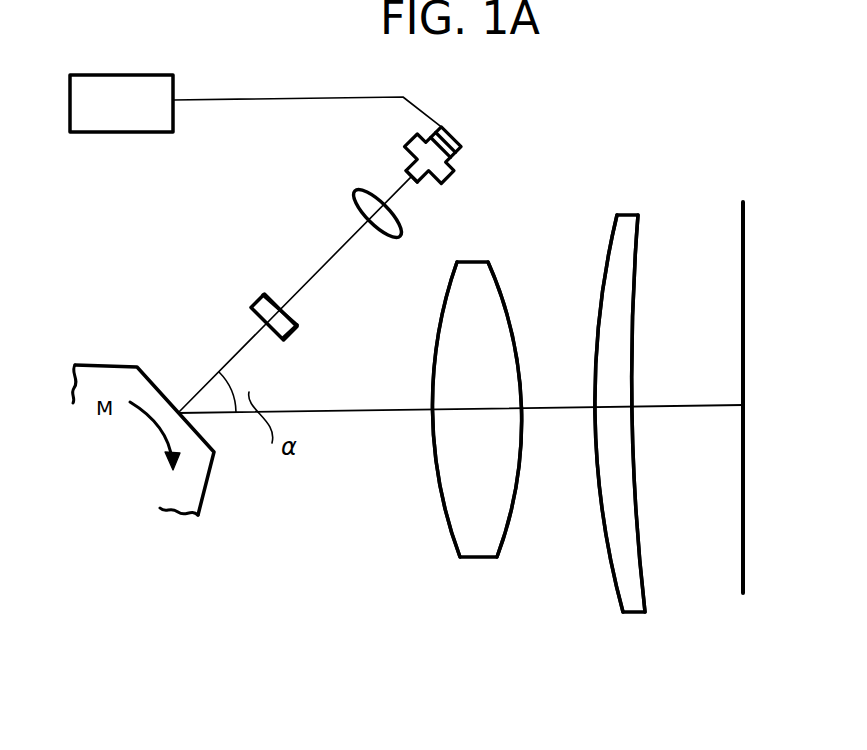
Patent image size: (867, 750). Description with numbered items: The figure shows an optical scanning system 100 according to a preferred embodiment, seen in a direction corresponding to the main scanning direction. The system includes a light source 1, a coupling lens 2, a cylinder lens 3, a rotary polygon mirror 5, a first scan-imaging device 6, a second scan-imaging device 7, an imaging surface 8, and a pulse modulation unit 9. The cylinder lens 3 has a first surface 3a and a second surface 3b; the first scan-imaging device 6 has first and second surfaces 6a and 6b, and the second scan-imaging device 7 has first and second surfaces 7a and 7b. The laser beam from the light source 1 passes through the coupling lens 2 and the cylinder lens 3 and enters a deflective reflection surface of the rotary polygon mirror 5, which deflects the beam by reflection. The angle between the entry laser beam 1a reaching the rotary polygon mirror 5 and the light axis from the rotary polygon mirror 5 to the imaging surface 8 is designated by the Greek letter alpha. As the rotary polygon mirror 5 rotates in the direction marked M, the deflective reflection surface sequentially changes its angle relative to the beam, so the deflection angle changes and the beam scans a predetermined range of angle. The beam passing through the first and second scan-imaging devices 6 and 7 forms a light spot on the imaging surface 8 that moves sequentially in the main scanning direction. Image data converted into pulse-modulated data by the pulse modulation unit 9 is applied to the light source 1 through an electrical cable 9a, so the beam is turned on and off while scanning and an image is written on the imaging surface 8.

The optical scanning system 100 is at (597, 137).
The pulse modulation unit 9 is at (108, 132).
The electrical cable 9a is at (233, 100).
The light source 1 is at (457, 181).
The entry laser beam 1a is at (403, 188).
The coupling lens 2 is at (380, 233).
The cylinder lens 3 is at (260, 300).
The first surface 3a is at (284, 313).
The second surface 3b is at (271, 339).
The rotary polygon mirror 5 is at (100, 367).
The first scan-imaging device 6 is at (497, 280).
The first surface 6a is at (445, 522).
The second surface 6b is at (508, 520).
The second scan-imaging device 7 is at (638, 257).
The first surface 7a is at (608, 573).
The second surface 7b is at (645, 572).
The imaging surface 8 is at (743, 257).